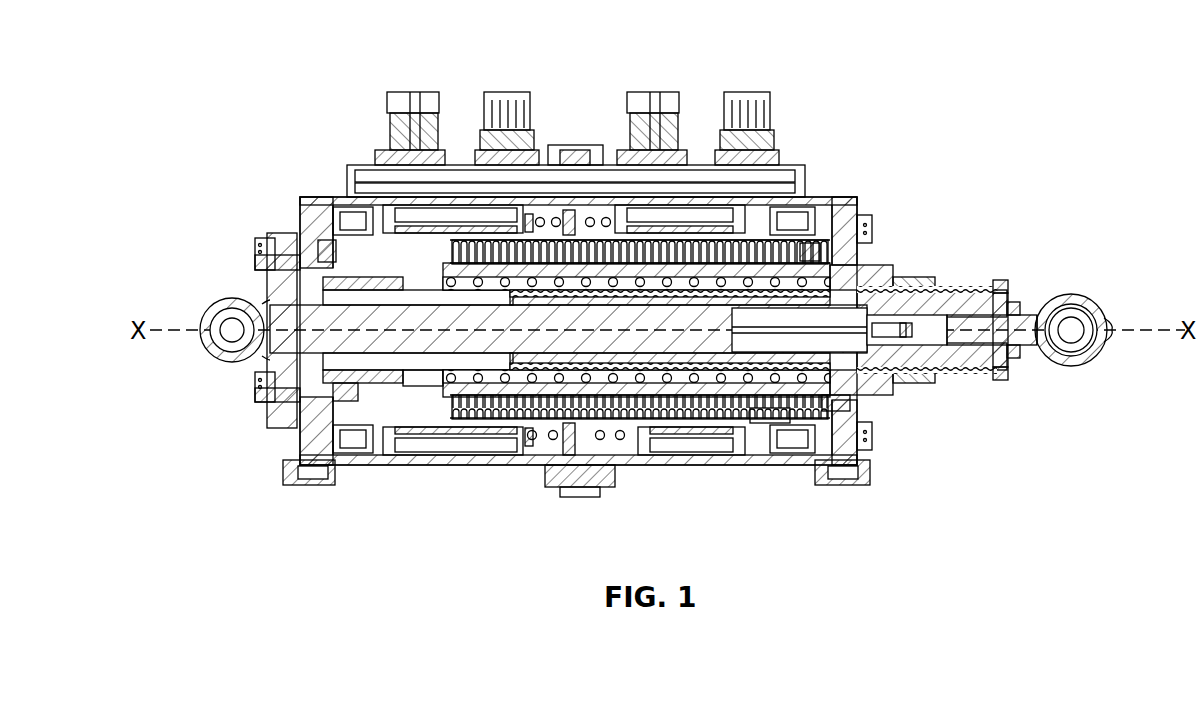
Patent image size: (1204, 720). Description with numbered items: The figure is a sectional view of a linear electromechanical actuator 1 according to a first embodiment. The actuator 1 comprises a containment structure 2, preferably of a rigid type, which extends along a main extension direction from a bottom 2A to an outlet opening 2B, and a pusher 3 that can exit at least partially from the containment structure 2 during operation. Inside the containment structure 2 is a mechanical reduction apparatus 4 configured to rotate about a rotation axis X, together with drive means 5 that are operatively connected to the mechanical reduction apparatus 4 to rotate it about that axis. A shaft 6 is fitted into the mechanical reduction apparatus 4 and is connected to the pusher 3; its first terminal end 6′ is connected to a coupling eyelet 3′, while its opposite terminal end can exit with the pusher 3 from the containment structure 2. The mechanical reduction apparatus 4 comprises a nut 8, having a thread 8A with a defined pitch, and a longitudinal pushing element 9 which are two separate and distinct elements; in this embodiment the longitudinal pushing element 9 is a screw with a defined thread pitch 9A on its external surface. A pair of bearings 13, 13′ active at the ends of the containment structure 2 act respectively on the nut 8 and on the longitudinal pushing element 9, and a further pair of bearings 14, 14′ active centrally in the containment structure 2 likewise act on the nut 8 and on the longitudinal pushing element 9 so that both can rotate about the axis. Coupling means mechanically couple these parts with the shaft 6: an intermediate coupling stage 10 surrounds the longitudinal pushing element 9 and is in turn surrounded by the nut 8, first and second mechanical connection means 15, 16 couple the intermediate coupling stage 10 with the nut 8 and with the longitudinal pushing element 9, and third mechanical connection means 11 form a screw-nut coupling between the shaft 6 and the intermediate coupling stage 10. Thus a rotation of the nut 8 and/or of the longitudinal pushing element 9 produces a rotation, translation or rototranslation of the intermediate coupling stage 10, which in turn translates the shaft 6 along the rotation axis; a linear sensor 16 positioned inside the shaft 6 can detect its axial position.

The linear electromechanical actuator 1 is at (340, 58).
The containment structure 2 is at (340, 184).
The bottom 2A is at (268, 280).
The outlet opening 2B is at (858, 398).
The pusher 3 is at (1074, 290).
The coupling eyelet 3′ is at (1020, 348).
The mechanical reduction apparatus 4 is at (578, 212).
The drive means 5 is at (440, 155).
The shaft 6 is at (868, 485).
The first terminal end 6′ is at (1000, 385).
The nut 8 is at (742, 425).
The thread 8A is at (642, 432).
The longitudinal pushing element 9 is at (304, 480).
The thread pitch 9A is at (356, 395).
The intermediate coupling stage 10 is at (520, 400).
The third mechanical connection means 11 is at (875, 278).
The bearing 13 is at (772, 232).
The bearing 13′ is at (325, 243).
The bearing 14 is at (625, 220).
The bearing 14′ is at (452, 185).
The first mechanical connection means 15 is at (600, 497).
The second mechanical connection means 16 is at (552, 400).